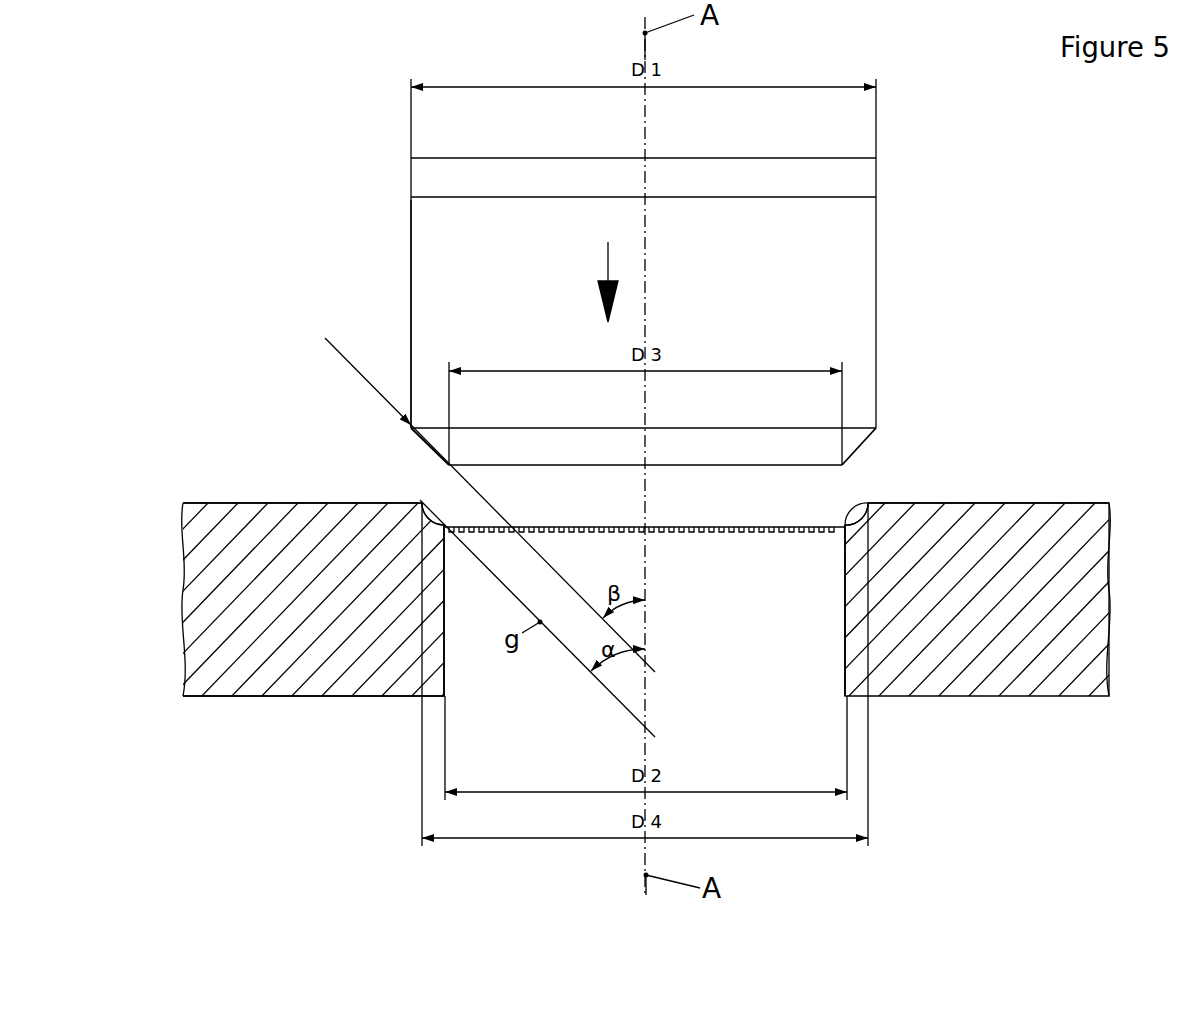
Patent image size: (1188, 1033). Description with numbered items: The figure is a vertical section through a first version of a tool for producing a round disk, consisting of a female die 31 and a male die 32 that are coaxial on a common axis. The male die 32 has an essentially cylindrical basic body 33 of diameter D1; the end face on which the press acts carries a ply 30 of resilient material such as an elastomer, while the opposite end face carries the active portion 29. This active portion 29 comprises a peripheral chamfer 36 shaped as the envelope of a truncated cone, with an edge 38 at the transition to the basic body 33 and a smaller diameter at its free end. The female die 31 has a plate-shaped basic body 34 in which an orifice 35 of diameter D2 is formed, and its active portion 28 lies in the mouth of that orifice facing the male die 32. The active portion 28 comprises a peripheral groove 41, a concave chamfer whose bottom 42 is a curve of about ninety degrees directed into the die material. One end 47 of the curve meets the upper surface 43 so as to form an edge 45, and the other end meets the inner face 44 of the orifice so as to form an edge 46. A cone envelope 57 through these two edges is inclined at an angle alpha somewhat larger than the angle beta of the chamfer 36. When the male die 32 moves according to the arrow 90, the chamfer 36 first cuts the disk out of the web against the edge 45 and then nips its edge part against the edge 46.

The active portion 28 is at (954, 501).
The active portion 29 is at (923, 379).
The ply 30 is at (453, 177).
The female die 31 is at (287, 662).
The male die 32 is at (831, 297).
The basic body 33 is at (410, 283).
The basic body 34 is at (386, 697).
The orifice 35 is at (644, 610).
The peripheral chamfer 36 is at (370, 425).
The edge 38 is at (473, 495).
The peripheral groove 41 is at (918, 451).
The bottom 42 is at (343, 570).
The upper surface 43 is at (215, 502).
The inner face 44 is at (845, 643).
The edge 45 is at (988, 473).
The edge 46 is at (644, 564).
The end 47 is at (421, 502).
The cone envelope 57 is at (575, 662).
The arrow 90 is at (604, 266).